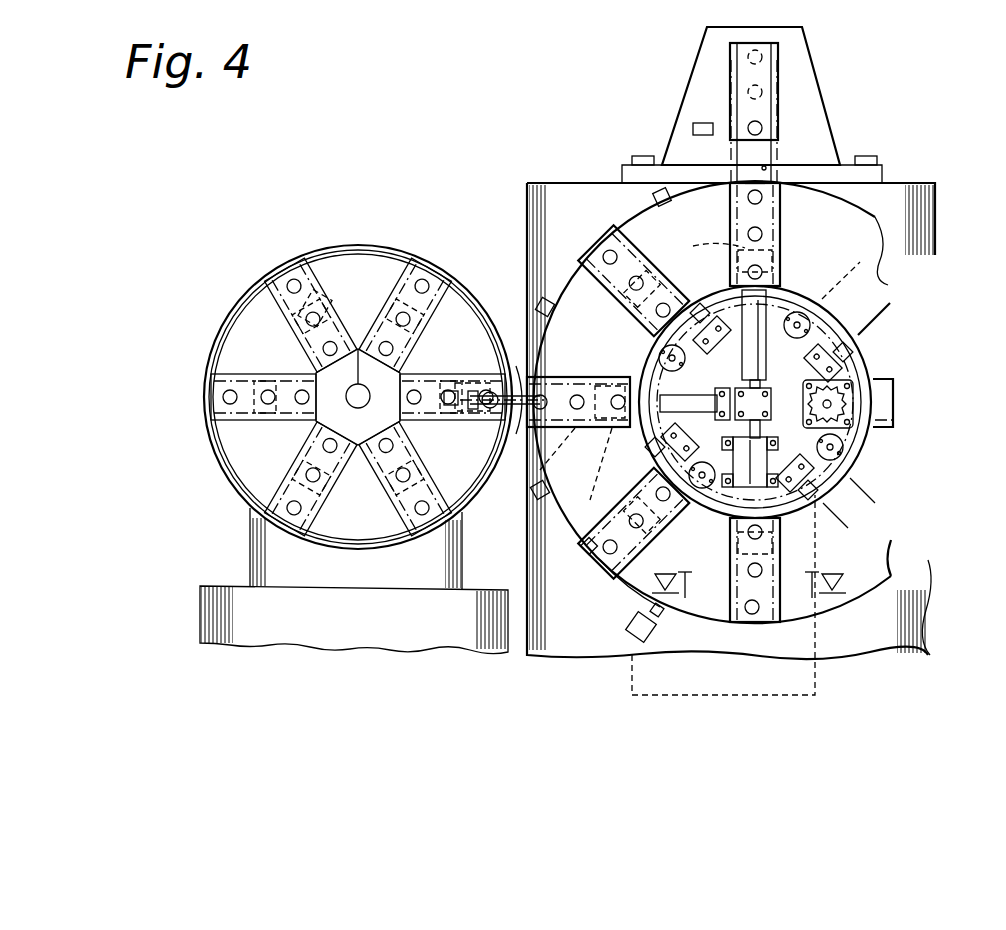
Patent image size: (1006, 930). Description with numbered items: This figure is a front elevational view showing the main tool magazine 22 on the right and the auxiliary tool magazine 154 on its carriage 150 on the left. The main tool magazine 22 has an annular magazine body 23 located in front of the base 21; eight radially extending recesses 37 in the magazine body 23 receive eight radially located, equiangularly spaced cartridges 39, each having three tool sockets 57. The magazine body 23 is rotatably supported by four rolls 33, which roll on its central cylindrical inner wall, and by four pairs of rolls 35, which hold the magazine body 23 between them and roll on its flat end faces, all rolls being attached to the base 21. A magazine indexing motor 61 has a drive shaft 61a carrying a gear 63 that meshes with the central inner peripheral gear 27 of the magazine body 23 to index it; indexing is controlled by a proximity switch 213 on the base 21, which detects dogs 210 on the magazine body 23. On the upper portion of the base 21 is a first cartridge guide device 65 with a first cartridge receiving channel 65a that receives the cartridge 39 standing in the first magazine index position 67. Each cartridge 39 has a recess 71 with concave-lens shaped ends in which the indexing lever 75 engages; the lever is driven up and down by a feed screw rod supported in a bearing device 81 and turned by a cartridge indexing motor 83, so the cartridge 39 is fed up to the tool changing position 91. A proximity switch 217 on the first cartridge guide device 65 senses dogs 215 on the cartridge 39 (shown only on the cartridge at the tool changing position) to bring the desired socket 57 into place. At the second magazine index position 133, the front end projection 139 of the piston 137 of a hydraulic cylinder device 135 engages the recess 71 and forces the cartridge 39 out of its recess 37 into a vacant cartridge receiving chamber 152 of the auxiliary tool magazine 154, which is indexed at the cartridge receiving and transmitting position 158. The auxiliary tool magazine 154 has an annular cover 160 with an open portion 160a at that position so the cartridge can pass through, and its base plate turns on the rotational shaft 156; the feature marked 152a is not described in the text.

The auxiliary tool magazine 154 is at (372, 244).
The rotational shaft 156 is at (356, 384).
The annular cover 160 is at (434, 252).
The cartridge receiving chamber 152 is at (447, 380).
The arm slot 152a is at (440, 416).
The second magazine index position 133 is at (452, 380).
The recess 71 is at (287, 310).
The cartridge receiving and transmitting position 158 is at (520, 420).
The open portion 160a is at (521, 432).
The carriage 150 is at (358, 640).
The base 21 is at (580, 646).
The main tool magazine 22 is at (857, 601).
The magazine body 23 is at (632, 580).
The tool changing position 91 is at (780, 130).
The tool socket 57 is at (745, 128).
The dog 215 is at (730, 57).
The proximity switch 217 is at (700, 135).
The first cartridge guide device 65 is at (762, 152).
The first cartridge receiving channel 65a is at (760, 168).
The first magazine index position 67 is at (762, 177).
The cartridge 39 is at (636, 270).
The dog 210 is at (660, 198).
The roll 35 is at (700, 308).
The roll 33 is at (800, 323).
The indexing lever 75 is at (767, 352).
The hydraulic cylinder device 135 is at (665, 398).
The magazine indexing motor 61 is at (770, 396).
The bearing device 81 is at (762, 410).
The cartridge indexing motor 83 is at (722, 488).
The drive shaft 61a is at (853, 425).
The central inner peripheral gear 27 is at (848, 392).
The gear 63 is at (845, 447).
The front end projection 139 is at (563, 451).
The piston 137 is at (590, 464).
The radially extending recess 37 is at (590, 552).
The proximity switch 213 is at (650, 640).